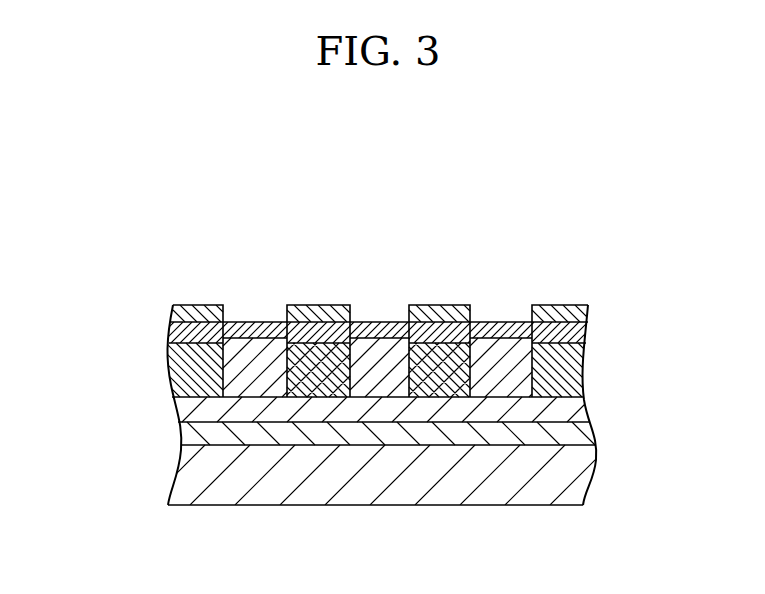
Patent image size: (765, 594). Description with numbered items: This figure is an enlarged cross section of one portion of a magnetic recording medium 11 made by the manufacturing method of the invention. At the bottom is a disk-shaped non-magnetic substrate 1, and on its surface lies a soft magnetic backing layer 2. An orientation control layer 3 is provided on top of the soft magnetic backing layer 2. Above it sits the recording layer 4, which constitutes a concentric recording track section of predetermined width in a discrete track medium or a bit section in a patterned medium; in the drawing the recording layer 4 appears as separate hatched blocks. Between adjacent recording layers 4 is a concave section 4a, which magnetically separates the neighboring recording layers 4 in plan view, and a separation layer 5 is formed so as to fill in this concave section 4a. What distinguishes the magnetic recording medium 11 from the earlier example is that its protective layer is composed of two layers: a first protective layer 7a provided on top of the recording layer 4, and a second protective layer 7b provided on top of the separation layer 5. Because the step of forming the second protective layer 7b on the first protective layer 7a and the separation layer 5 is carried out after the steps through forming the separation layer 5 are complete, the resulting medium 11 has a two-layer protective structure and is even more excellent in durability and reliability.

The magnetic recording medium 11 is at (441, 226).
The non-magnetic substrate 1 is at (572, 488).
The soft magnetic backing layer 2 is at (577, 432).
The orientation control layer 3 is at (584, 410).
The recording layer 4 is at (187, 376).
The concave section 4a is at (472, 348).
The separation layer 5 is at (371, 340).
The first protective layer 7a is at (412, 333).
The second protective layer 7b is at (260, 320).